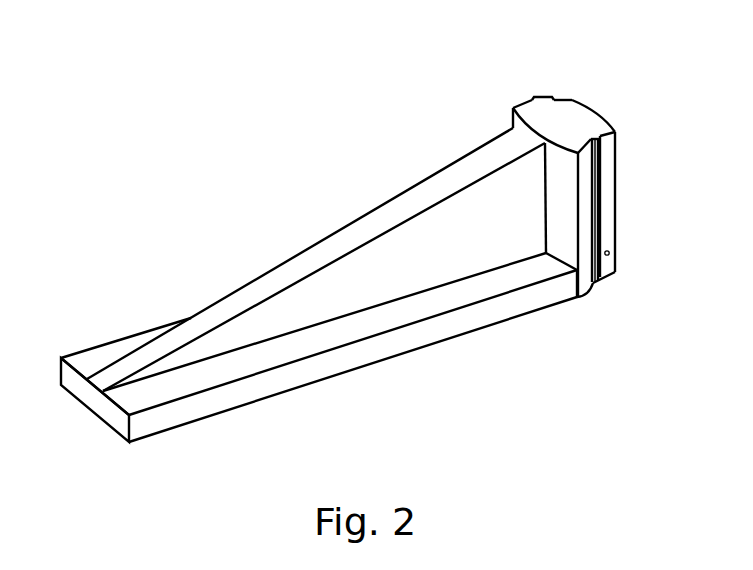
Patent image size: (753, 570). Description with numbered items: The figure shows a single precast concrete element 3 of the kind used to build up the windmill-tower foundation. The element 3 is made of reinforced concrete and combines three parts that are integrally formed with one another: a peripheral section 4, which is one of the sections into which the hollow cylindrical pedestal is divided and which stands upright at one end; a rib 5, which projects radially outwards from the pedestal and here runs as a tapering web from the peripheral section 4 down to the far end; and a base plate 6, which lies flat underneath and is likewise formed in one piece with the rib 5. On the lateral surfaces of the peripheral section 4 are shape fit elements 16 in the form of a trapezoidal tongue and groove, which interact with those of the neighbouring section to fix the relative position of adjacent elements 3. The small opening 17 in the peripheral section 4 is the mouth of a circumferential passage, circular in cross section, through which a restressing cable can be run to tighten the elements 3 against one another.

The precast concrete element 3 is at (177, 228).
The peripheral section 4 is at (565, 130).
The rib 5 is at (408, 245).
The base plate 6 is at (400, 316).
The shape fit element 16 is at (545, 96).
The opening of the passage 17 is at (610, 253).